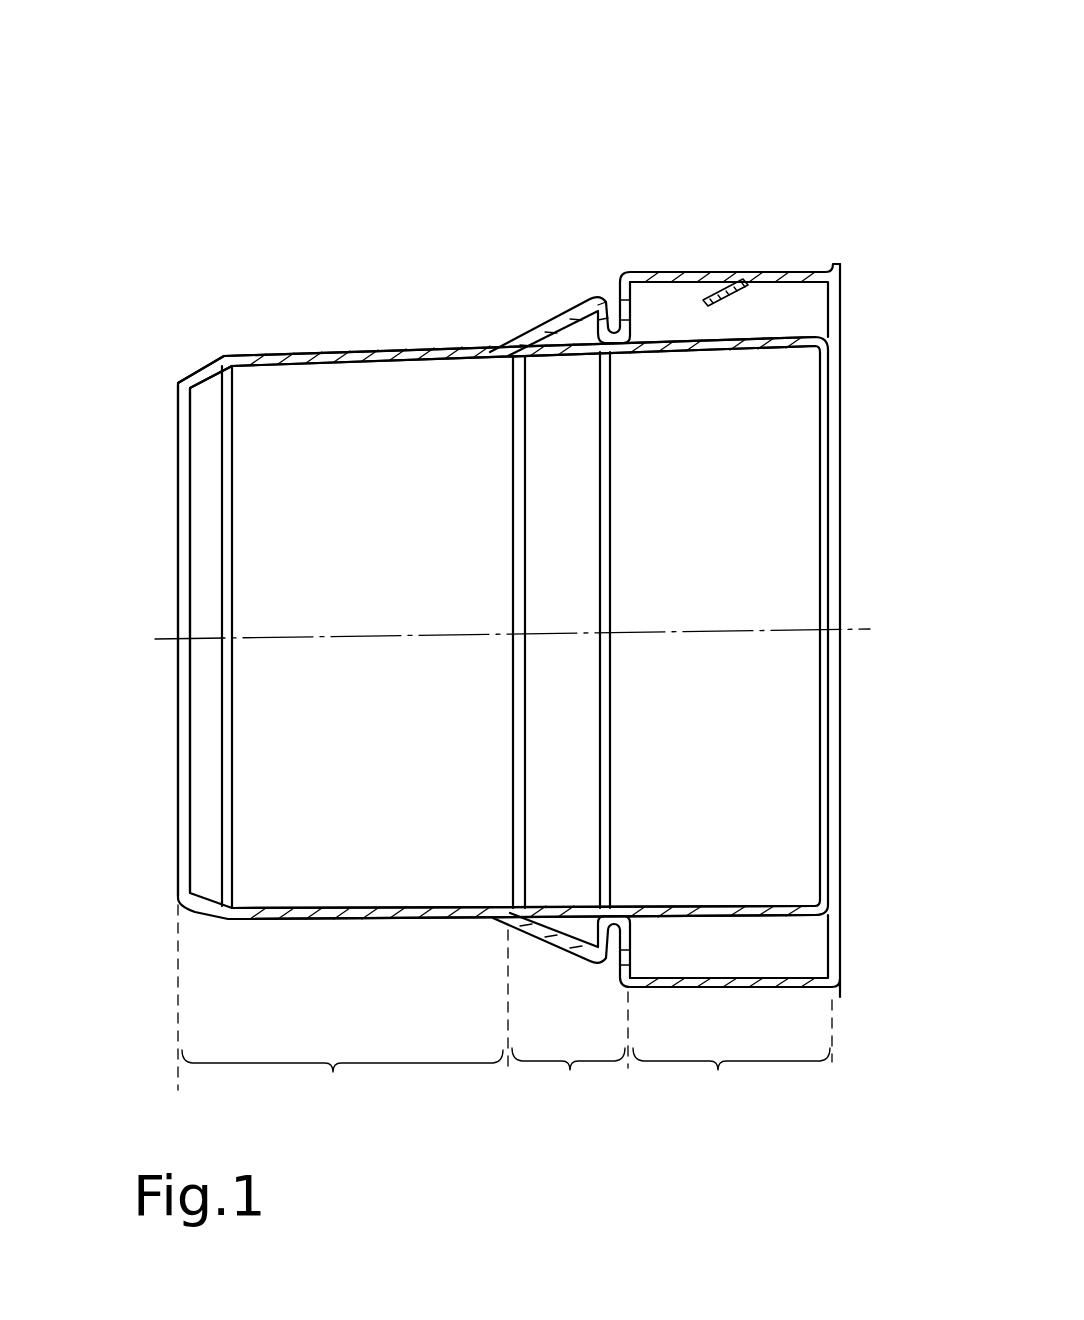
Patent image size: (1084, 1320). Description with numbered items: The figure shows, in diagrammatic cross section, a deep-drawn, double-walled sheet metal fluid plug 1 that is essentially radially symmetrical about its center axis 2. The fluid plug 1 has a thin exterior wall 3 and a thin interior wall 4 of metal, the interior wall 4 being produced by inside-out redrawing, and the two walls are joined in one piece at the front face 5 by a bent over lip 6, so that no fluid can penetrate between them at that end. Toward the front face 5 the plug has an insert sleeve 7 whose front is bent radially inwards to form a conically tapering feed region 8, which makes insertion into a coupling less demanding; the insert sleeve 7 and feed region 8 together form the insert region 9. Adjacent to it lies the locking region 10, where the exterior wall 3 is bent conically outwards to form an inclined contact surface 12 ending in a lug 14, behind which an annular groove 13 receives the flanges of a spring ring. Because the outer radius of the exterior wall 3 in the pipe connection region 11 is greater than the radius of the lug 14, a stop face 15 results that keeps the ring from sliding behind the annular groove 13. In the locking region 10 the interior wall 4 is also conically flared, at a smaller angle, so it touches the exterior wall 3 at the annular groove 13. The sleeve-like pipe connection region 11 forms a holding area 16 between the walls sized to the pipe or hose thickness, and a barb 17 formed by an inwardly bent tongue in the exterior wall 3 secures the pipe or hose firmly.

The fluid plug 1 is at (503, 100).
The center axis 2 is at (860, 630).
The exterior wall 3 is at (805, 268).
The interior wall 4 is at (710, 352).
The front face 5 is at (140, 632).
The bent over lip 6 is at (168, 383).
The insert sleeve 7 is at (346, 292).
The feed region 8 is at (197, 355).
The insert region 9 is at (343, 1018).
The locking region 10 is at (570, 1061).
The pipe connection region 11 is at (732, 1065).
The inclined contact surface 12 is at (556, 312).
The annular groove 13 is at (610, 293).
The lug 14 is at (591, 293).
The stop face 15 is at (645, 285).
The holding area 16 is at (805, 318).
The barb 17 is at (725, 277).